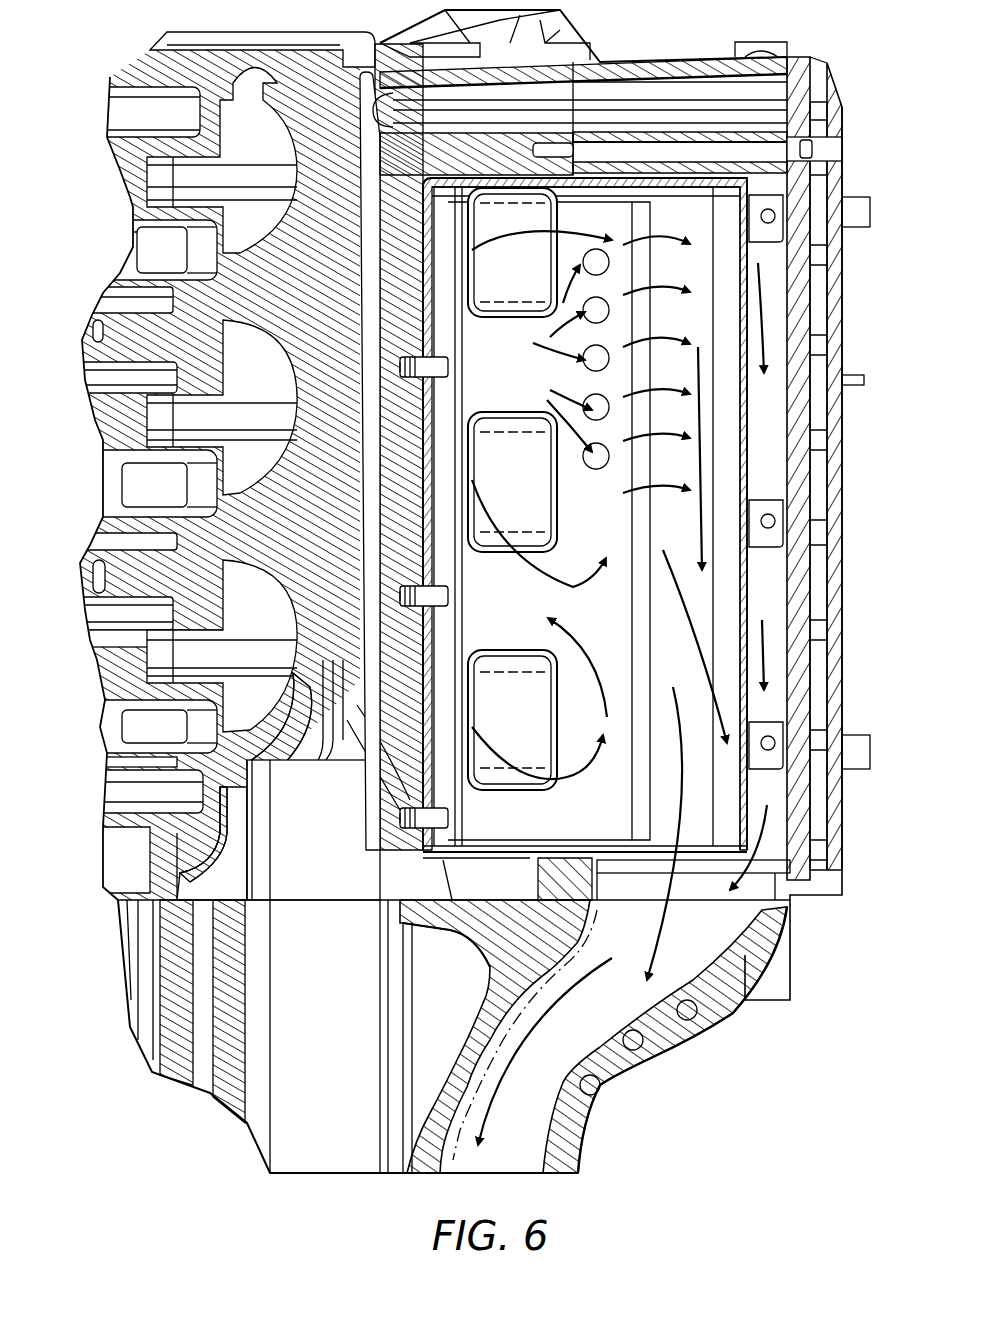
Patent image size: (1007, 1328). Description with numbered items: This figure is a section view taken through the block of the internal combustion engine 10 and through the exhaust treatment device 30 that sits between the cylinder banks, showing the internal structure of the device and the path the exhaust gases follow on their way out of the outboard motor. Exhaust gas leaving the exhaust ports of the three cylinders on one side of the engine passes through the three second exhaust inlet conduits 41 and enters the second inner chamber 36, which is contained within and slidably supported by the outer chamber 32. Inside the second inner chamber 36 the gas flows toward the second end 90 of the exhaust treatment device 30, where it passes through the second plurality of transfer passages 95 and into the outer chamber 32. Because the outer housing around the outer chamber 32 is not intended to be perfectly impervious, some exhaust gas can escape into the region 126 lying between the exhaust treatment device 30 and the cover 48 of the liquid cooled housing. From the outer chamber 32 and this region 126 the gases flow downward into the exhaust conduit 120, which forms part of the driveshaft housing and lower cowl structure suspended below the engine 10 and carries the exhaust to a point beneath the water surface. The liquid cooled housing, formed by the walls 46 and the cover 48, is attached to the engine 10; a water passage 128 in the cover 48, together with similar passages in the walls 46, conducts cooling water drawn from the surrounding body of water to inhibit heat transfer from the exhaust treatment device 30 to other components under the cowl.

The internal combustion engine 10 is at (108, 230).
The exhaust treatment device 30 is at (750, 462).
The outer chamber 32 is at (705, 596).
The second inner chamber 36 is at (504, 378).
The second exhaust inlet conduits 41 is at (504, 269).
The walls of the liquid cooled housing 46 is at (692, 130).
The cover of the liquid cooled housing 48 is at (842, 830).
The second end 90 is at (667, 197).
The second plurality of transfer passages 95 is at (605, 265).
The exhaust conduit 120 is at (520, 1128).
The region 126 is at (770, 405).
The water passage 128 is at (820, 656).